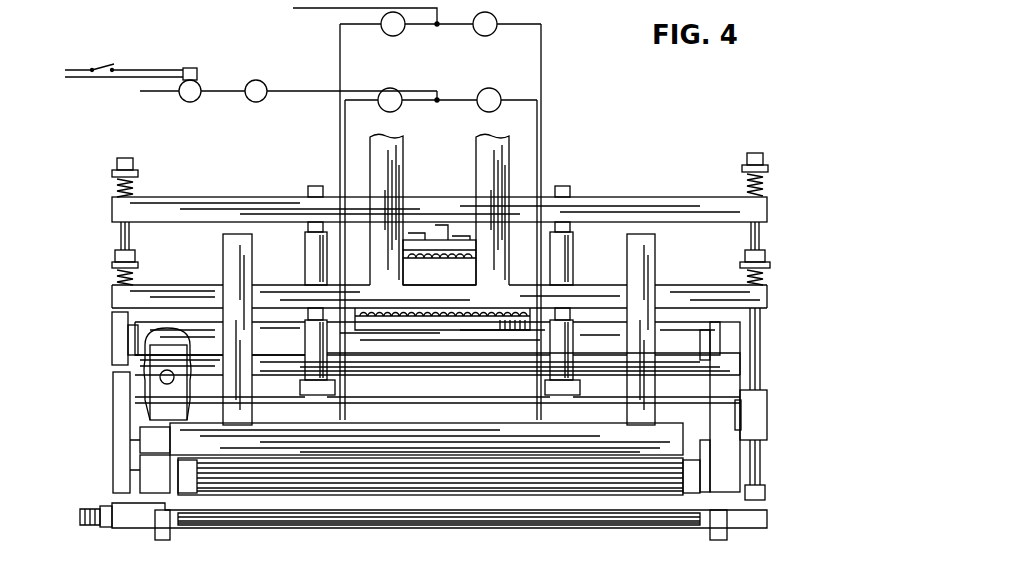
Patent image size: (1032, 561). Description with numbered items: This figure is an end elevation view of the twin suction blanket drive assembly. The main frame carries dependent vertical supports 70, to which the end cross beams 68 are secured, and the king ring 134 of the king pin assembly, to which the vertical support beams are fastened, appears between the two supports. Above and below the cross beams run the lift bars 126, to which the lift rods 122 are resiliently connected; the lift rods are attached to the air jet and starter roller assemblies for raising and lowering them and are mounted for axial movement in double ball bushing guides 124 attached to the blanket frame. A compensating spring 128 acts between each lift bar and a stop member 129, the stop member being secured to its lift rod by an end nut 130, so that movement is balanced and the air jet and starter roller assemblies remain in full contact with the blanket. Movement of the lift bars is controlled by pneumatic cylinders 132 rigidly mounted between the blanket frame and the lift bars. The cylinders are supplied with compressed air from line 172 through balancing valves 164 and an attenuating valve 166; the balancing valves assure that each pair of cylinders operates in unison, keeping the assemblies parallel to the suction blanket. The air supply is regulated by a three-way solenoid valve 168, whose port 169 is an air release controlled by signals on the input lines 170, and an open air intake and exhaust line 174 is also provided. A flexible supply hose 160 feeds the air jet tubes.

The cross beam 68 is at (293, 457).
The vertical support 70 is at (252, 292).
The lift rod 122 is at (120, 240).
The double ball bushing guide 124 is at (768, 400).
The lift bar 126 is at (224, 197).
The compensating spring 128 is at (134, 186).
The stop member 129 is at (112, 173).
The end nut 130 is at (131, 165).
The pneumatic cylinder 132 is at (305, 250).
The king ring 134 is at (434, 281).
The flexible supply hose 160 is at (82, 520).
The balancing valve 164 is at (482, 88).
The attenuating valve 166 is at (265, 102).
The three-way solenoid valve 168 is at (202, 84).
The port 169 is at (190, 103).
The input line 170 is at (62, 74).
The compressed air line 172 is at (140, 92).
The open air intake and exhaust line 174 is at (316, 9).